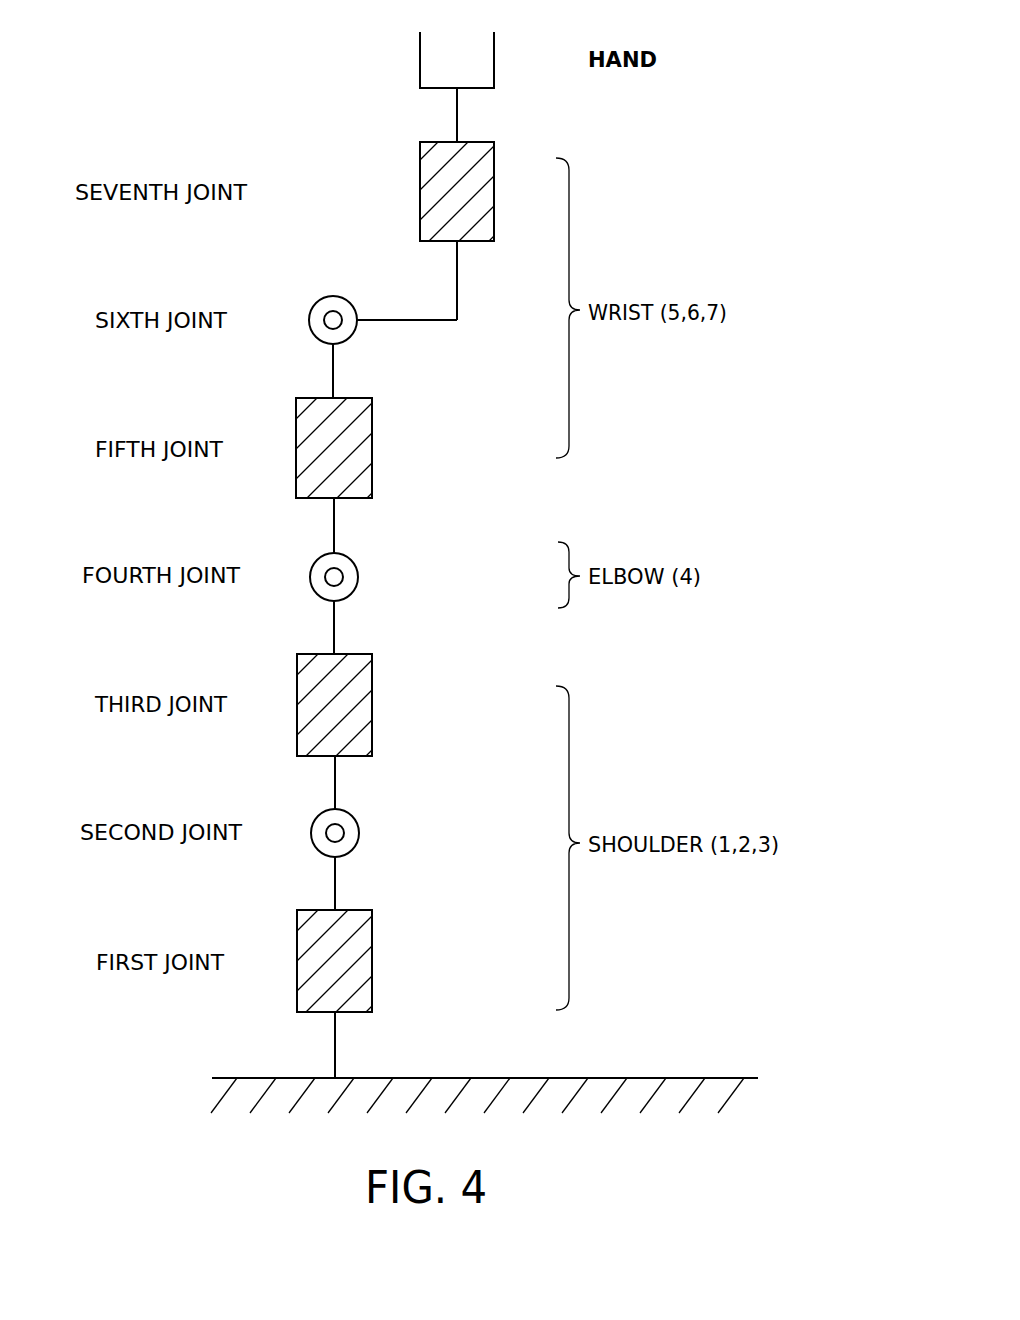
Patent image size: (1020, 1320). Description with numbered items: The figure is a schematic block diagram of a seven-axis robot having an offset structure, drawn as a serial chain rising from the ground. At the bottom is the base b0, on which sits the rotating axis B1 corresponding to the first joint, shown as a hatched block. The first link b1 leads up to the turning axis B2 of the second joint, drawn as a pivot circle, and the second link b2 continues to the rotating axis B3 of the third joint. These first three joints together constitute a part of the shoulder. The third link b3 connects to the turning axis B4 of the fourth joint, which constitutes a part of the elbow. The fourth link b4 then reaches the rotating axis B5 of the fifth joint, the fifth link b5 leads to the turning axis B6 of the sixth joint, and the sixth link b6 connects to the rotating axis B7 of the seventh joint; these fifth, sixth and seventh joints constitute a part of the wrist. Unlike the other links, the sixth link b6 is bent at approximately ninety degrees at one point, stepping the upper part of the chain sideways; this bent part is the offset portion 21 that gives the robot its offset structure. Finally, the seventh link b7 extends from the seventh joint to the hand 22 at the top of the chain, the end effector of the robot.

The hand 22 is at (494, 58).
The offset portion 21 is at (445, 309).
The seventh link b7 is at (457, 116).
The rotating axis B7 is at (494, 190).
The sixth link b6 is at (457, 268).
The turning axis B6 is at (350, 337).
The fifth link b5 is at (333, 370).
The rotating axis B5 is at (372, 441).
The fourth link b4 is at (334, 523).
The turning axis B4 is at (358, 577).
The third link b3 is at (334, 627).
The rotating axis B3 is at (372, 711).
The second link b2 is at (335, 783).
The turning axis B2 is at (359, 833).
The first link b1 is at (335, 881).
The rotating axis B1 is at (372, 965).
The base b0 is at (335, 1040).